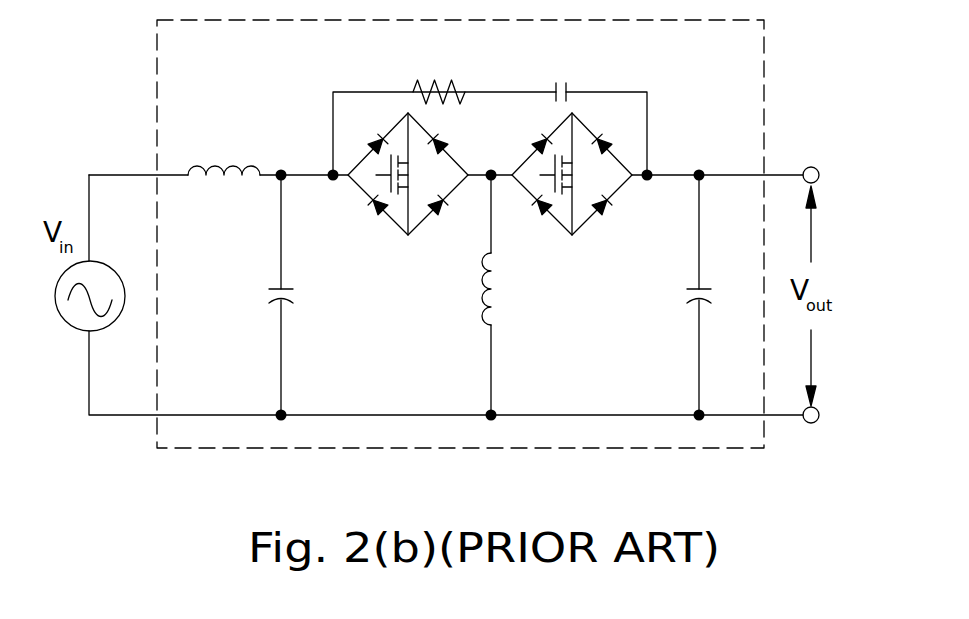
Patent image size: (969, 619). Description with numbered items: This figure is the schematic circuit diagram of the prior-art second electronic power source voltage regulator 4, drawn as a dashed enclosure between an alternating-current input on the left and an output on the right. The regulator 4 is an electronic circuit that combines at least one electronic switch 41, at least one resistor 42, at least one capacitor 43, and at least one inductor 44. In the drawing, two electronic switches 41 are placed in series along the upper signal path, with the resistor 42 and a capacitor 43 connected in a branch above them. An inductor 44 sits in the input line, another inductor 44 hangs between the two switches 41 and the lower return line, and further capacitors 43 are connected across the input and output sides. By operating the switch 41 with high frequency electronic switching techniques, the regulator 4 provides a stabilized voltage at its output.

The second electronic power source voltage regulator 4 is at (742, 117).
The electronic switch 41 is at (535, 153).
The resistor 42 is at (439, 75).
The capacitor 43 is at (509, 180).
The inductor 44 is at (361, 230).